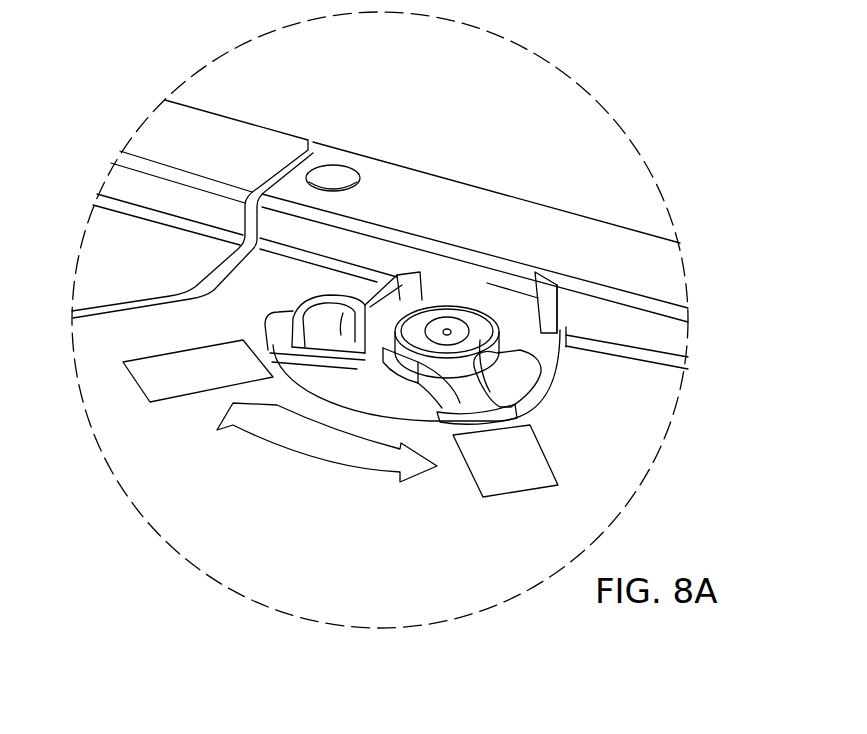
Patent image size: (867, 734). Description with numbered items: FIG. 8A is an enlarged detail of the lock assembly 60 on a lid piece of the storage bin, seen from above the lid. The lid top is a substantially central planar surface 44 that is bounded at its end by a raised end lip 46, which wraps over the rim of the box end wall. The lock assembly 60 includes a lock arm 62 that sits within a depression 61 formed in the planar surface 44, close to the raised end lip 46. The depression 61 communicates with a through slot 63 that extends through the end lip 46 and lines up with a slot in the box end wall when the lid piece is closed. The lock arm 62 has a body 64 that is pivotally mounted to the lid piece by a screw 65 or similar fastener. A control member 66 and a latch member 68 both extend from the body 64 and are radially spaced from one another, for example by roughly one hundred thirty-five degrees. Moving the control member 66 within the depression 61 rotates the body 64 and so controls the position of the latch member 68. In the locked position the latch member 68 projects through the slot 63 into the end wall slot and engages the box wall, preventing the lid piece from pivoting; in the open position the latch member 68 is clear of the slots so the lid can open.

The central planar surface 44 is at (657, 237).
The raised end lip 46 is at (380, 234).
The lock assembly 60 is at (475, 293).
The depression 61 is at (333, 387).
The lock arm 62 is at (417, 308).
The through slot 63 is at (552, 323).
The body 64 is at (478, 308).
The screw 65 is at (447, 330).
The control member 66 is at (420, 413).
The latch member 68 is at (553, 326).